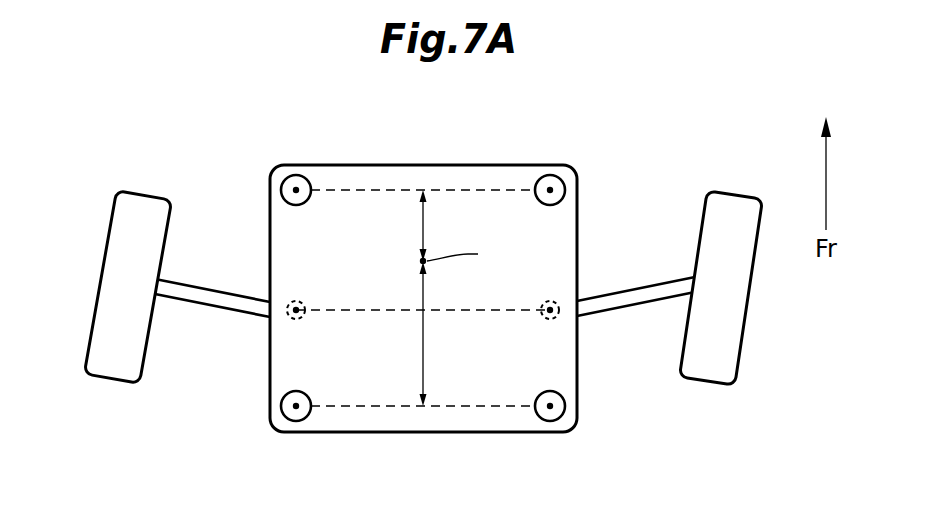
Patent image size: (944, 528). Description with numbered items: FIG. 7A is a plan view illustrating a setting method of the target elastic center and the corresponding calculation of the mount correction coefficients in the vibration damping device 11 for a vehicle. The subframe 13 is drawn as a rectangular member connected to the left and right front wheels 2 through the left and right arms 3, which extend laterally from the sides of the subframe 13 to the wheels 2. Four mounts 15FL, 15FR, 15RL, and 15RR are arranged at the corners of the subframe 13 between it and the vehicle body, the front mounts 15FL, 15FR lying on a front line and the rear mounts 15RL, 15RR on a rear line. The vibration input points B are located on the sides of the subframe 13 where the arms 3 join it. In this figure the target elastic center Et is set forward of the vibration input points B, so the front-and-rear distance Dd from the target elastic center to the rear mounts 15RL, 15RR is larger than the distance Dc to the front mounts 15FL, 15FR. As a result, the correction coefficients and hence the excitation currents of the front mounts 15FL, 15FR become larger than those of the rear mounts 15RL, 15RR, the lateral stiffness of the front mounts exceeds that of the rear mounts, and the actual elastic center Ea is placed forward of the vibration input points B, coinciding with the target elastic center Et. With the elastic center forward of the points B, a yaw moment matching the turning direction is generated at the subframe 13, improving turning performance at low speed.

The vibration damping device 11 is at (261, 416).
The front wheel 2 is at (150, 192).
The arm 3 is at (207, 304).
The subframe 13 is at (408, 165).
The front left mount 15FL is at (296, 175).
The front right mount 15FR is at (550, 175).
The rear left mount 15RL is at (296, 421).
The rear right mount 15RR is at (550, 421).
The vibration input point B is at (296, 300).